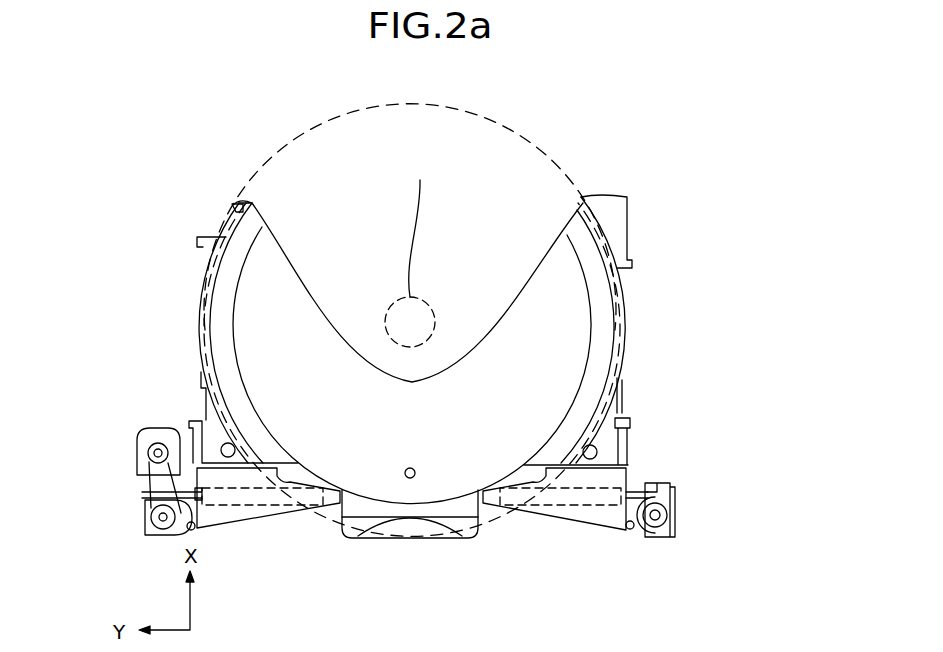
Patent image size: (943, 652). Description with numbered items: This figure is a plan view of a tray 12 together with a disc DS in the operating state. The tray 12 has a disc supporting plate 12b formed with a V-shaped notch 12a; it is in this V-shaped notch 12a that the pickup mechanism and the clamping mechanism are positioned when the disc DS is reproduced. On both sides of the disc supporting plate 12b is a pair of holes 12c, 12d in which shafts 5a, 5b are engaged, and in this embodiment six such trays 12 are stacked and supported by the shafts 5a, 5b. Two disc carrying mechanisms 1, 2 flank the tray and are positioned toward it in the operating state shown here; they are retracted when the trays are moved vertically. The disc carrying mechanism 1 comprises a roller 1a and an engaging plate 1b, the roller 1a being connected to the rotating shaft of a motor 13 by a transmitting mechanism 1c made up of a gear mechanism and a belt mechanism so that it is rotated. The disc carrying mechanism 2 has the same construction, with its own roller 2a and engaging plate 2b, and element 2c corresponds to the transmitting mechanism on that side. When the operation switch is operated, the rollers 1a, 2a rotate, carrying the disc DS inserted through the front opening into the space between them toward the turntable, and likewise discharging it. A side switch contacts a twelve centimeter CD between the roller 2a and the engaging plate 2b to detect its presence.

The disc DS is at (562, 152).
The tray 12 is at (624, 323).
The V-shaped notch 12a is at (452, 308).
The disc supporting plate 12b is at (305, 303).
The hole 12c is at (155, 405).
The hole 12d is at (697, 436).
The shaft 5a is at (228, 450).
The shaft 5b is at (598, 452).
The motor 13 is at (136, 450).
The disc carrying mechanism 1 is at (213, 532).
The roller 1a is at (267, 470).
The engaging plate 1b is at (268, 498).
The transmitting mechanism 1c is at (150, 530).
The disc carrying mechanism 2 is at (635, 528).
The roller 2a is at (557, 472).
The engaging plate 2b is at (554, 499).
The second slide drive 2c is at (685, 533).